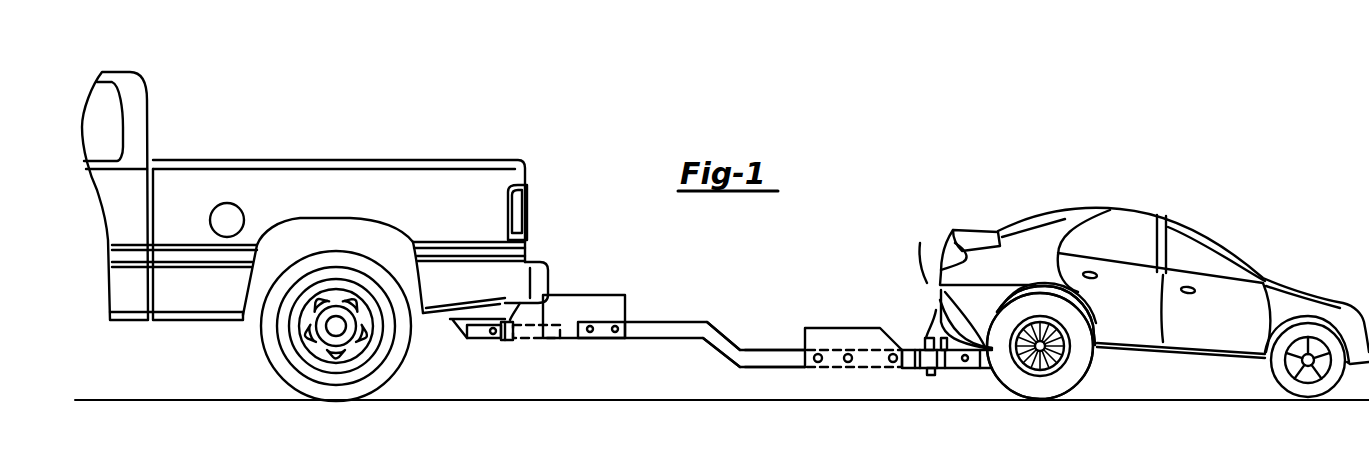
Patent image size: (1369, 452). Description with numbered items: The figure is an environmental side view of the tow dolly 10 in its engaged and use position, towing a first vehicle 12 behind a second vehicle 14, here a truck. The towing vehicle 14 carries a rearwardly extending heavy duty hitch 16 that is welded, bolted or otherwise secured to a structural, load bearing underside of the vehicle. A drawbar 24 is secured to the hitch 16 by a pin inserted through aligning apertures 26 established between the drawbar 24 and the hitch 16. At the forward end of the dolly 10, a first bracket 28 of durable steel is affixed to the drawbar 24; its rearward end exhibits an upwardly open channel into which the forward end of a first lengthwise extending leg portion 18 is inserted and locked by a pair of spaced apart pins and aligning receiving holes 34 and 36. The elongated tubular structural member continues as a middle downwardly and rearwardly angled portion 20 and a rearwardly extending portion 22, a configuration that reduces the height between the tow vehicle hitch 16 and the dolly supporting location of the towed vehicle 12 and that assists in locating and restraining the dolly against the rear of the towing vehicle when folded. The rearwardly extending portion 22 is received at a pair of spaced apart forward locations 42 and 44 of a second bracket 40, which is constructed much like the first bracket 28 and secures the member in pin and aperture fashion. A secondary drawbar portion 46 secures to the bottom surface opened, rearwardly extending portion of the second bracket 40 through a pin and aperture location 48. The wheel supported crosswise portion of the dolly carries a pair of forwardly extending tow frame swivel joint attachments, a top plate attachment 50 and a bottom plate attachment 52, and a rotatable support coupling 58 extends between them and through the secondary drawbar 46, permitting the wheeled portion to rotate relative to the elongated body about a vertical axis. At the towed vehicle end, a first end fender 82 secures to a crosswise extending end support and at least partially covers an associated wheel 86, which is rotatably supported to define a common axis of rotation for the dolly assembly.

The tow dolly 10 is at (773, 281).
The first vehicle 12 is at (1077, 220).
The second vehicle 14 is at (325, 155).
The hitch 16 is at (457, 334).
The first lengthwise extending leg portion 18 is at (660, 322).
The middle angled portion 20 is at (722, 346).
The rearwardly extending portion 22 is at (768, 356).
The drawbar 24 is at (482, 339).
The aligning apertures 26 is at (505, 339).
The first bracket 28 is at (583, 295).
The pin and receiving hole 34 is at (592, 322).
The pin and receiving hole 36 is at (617, 333).
The second bracket 40 is at (840, 328).
The forward location 42 is at (842, 363).
The forward location 44 is at (813, 360).
The secondary drawbar portion 46 is at (913, 368).
The pin/aperture location 48 is at (894, 353).
The top tow frame swivel joint attachment 50 is at (950, 330).
The bottom tow frame swivel joint attachment 52 is at (943, 373).
The rotatable support coupling 58 is at (936, 310).
The first end fender 82 is at (1097, 311).
The wheel 86 is at (1047, 378).